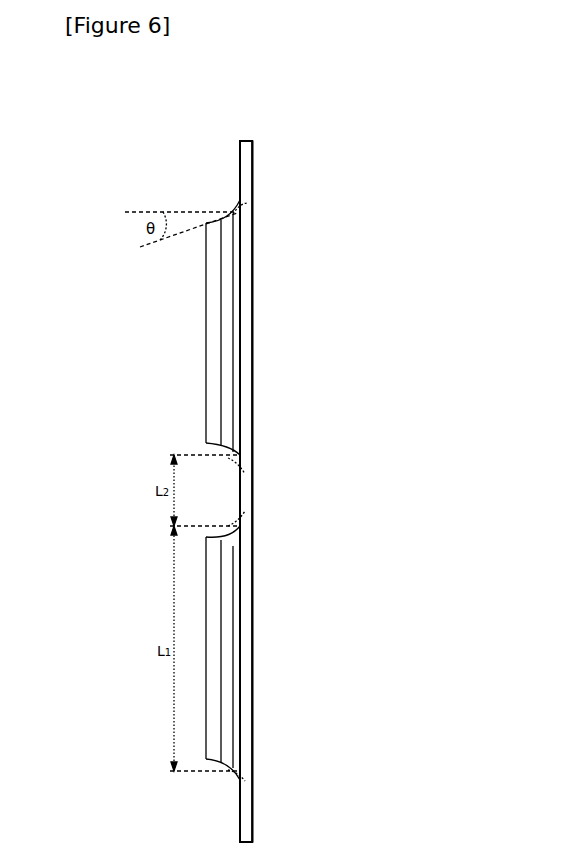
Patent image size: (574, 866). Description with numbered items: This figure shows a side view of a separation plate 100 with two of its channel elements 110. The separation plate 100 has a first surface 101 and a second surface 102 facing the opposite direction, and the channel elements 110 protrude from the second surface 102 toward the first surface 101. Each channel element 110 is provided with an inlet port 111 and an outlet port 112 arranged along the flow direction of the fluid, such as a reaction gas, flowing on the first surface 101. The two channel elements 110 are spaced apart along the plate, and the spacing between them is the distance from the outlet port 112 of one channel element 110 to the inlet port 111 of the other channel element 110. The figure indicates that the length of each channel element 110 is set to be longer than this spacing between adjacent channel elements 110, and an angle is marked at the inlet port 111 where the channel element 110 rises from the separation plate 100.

The separation plate 100 is at (292, 446).
The first surface 101 is at (240, 152).
The second surface 102 is at (253, 181).
The channel element 110 is at (162, 519).
The inlet port 111 is at (240, 200).
The outlet port 112 is at (245, 474).